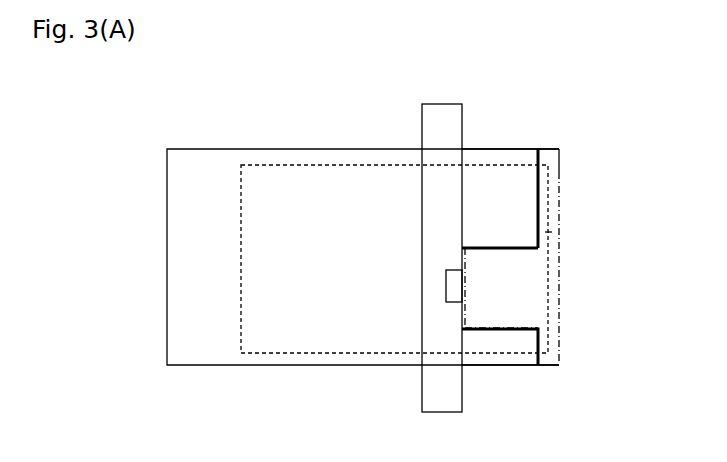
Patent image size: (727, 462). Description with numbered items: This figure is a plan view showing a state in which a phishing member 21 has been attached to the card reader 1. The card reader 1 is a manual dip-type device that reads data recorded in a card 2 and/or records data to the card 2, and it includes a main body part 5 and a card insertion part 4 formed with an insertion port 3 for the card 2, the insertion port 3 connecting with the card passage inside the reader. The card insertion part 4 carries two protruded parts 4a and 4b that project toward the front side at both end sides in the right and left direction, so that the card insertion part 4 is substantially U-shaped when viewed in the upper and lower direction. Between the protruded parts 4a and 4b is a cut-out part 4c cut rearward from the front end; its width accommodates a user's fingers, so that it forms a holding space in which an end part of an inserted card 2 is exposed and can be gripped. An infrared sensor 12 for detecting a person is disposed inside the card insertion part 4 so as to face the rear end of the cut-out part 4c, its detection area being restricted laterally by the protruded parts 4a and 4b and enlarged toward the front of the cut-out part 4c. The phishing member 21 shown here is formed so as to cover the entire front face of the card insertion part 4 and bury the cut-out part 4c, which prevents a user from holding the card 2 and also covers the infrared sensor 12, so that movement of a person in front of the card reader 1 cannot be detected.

The card reader 1 is at (604, 123).
The card 2 is at (292, 165).
The insertion port 3 is at (543, 232).
The card insertion part 4 is at (498, 149).
The protruded part 4a is at (539, 200).
The protruded part 4b is at (539, 345).
The cut-out part 4c is at (517, 328).
The main body part 5 is at (350, 149).
The infrared sensor 12 is at (446, 286).
The phishing member 21 is at (560, 273).